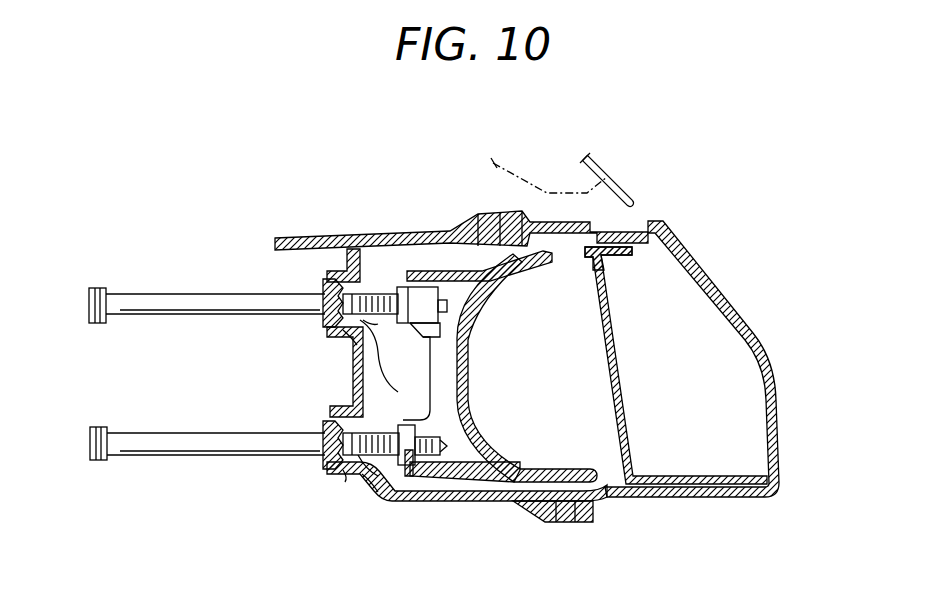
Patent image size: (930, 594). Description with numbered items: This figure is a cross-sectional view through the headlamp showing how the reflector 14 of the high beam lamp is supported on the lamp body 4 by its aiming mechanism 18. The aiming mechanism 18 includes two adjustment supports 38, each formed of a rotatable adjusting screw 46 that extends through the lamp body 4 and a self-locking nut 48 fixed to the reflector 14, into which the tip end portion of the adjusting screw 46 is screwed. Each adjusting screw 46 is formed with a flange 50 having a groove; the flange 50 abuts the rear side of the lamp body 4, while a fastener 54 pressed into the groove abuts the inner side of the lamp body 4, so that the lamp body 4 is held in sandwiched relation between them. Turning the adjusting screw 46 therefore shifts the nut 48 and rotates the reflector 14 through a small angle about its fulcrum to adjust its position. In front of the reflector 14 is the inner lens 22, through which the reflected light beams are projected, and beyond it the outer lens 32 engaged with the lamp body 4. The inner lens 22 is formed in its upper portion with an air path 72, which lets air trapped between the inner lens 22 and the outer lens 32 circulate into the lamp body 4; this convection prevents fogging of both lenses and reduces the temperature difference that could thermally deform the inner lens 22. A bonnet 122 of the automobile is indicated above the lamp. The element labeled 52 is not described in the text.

The lamp body 4 is at (355, 388).
The reflector 14 is at (475, 357).
The aiming mechanism 18 is at (177, 286).
The inner lens 22 is at (621, 353).
The outer lens 32 is at (757, 330).
The adjustment support 38 is at (263, 455).
The adjusting screw 46 is at (247, 298).
The self-locking nut 48 is at (405, 285).
The flange 50 is at (323, 320).
The bracket side wall 52 is at (380, 325).
The fastener 54 is at (357, 345).
The air path 72 is at (598, 270).
The bonnet 122 is at (632, 193).